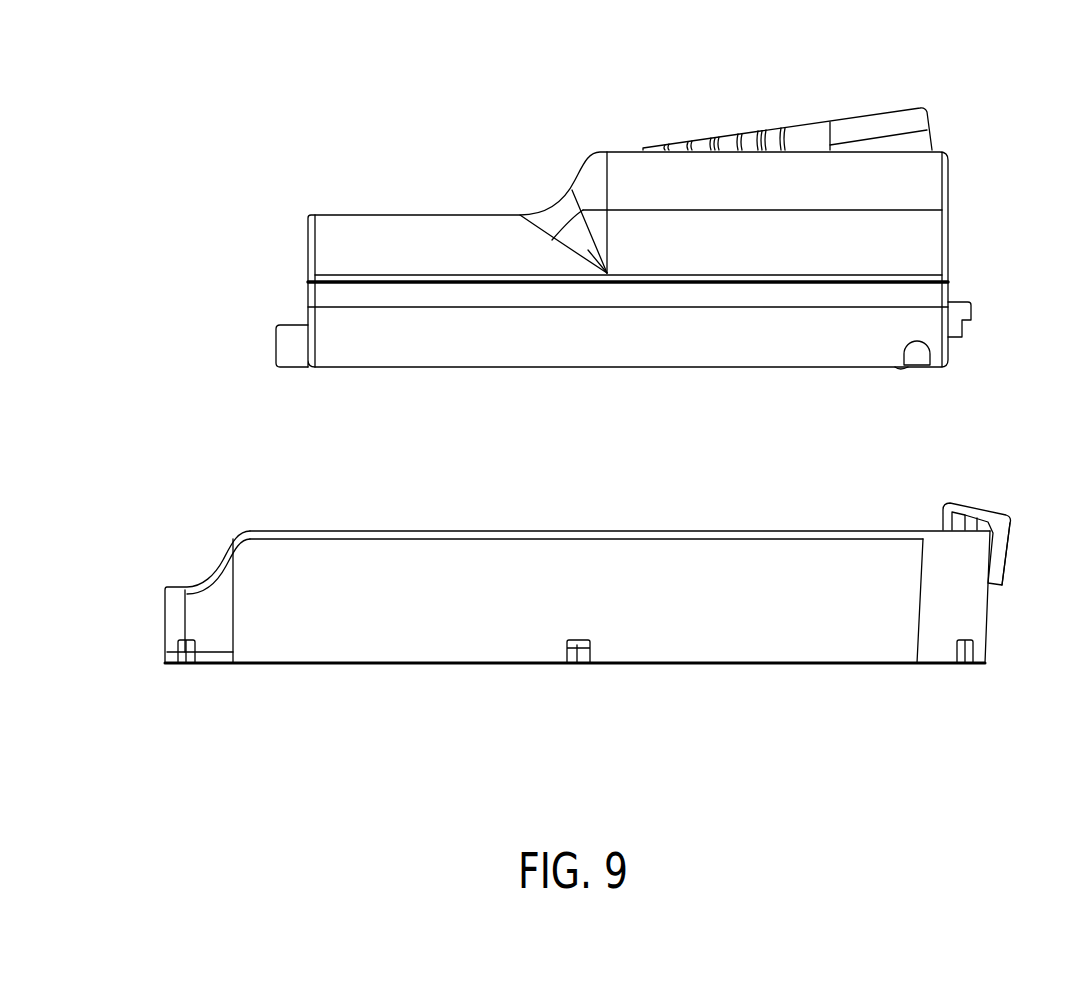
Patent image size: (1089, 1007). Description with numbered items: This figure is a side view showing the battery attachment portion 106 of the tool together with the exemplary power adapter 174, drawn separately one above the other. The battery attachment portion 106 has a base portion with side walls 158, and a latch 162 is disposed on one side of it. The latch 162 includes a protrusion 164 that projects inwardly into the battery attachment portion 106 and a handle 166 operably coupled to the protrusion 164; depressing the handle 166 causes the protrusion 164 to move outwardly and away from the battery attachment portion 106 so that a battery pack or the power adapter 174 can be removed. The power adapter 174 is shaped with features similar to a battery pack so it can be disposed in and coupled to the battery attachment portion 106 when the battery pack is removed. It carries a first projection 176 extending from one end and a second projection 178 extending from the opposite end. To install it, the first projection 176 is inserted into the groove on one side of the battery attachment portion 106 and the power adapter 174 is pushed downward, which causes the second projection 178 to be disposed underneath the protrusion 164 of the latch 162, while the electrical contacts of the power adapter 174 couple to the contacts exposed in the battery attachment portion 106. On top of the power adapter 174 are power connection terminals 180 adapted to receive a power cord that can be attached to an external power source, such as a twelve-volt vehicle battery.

The battery attachment portion 106 is at (619, 593).
The side walls 158 is at (355, 640).
The latch 162 is at (978, 554).
The protrusion 164 is at (943, 512).
The handle 166 is at (1012, 530).
The power adapter 174 is at (750, 113).
The first projection 176 is at (297, 345).
The second projection 178 is at (960, 310).
The power connection terminals 180 is at (893, 118).